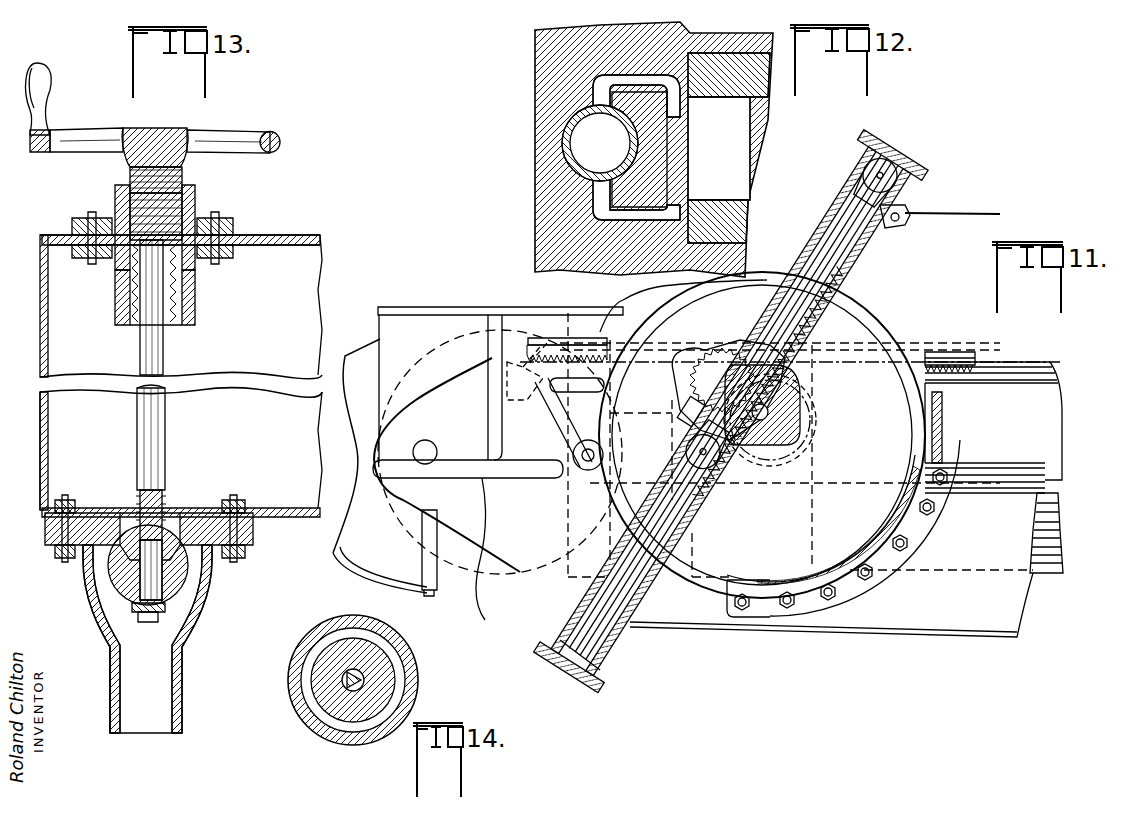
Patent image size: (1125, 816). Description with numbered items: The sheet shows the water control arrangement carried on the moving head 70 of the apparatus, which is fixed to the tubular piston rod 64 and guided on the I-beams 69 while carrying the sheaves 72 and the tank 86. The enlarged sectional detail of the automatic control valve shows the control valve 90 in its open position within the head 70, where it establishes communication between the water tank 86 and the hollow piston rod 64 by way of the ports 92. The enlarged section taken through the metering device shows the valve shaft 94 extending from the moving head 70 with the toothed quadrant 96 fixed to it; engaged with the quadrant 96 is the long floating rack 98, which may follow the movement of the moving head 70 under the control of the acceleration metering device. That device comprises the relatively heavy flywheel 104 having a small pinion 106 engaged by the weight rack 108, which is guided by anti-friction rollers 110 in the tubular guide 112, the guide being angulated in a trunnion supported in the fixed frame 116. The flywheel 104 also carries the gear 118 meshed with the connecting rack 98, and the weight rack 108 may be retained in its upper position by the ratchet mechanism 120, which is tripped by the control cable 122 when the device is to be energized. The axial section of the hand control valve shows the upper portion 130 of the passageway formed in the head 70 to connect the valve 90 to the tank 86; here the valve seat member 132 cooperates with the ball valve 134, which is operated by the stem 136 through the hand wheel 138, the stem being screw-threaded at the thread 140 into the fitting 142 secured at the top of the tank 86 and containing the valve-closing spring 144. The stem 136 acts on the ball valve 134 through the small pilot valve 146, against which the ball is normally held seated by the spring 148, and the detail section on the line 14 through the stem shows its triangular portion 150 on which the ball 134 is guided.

In FIG. 13, the section line 14— 14 is at (283, 570).
In FIG. 12, the tubular piston rod 64 is at (735, 205).
In FIG. 11, the I-beams 69 is at (945, 622).
In FIG. 13, the moving head 70 is at (112, 688).
In FIG. 14, the moving head 70 is at (305, 712).
In FIG. 12, the moving head 70 is at (540, 48).
In FIG. 11, the moving head 70 is at (415, 310).
In FIG. 11, the sheaves 72 is at (445, 572).
In FIG. 13, the tank 86 is at (40, 432).
In FIG. 12, the control valve 90 is at (562, 136).
In FIG. 12, the ports 92 is at (595, 195).
In FIG. 11, the valve shaft 94 is at (585, 470).
In FIG. 11, the toothed quadrant 96 is at (540, 380).
In FIG. 11, the floating rack 98 is at (537, 347).
In FIG. 11, the flywheel 104 is at (905, 337).
In FIG. 11, the pinion 106 is at (775, 418).
In FIG. 11, the weight rack 108 is at (855, 278).
In FIG. 11, the anti-friction rollers 110 is at (897, 172).
In FIG. 11, the tubular guide 112 is at (640, 605).
In FIG. 11, the fixed frame 116 is at (903, 518).
In FIG. 11, the gear 118 is at (728, 390).
In FIG. 11, the ratchet mechanism 120 is at (905, 212).
In FIG. 11, the control cable 122 is at (967, 203).
In FIG. 13, the passageway upper portion 130 is at (186, 663).
In FIG. 13, the valve seat member 132 is at (200, 513).
In FIG. 13, the ball valve 134 is at (186, 600).
In FIG. 14, the ball valve 134 is at (388, 690).
In FIG. 13, the stem 136 is at (165, 440).
In FIG. 13, the hand wheel 138 is at (187, 136).
In FIG. 13, the screw thread 140 is at (195, 200).
In FIG. 13, the fitting 142 is at (235, 228).
In FIG. 13, the valve-closing spring 144 is at (195, 285).
In FIG. 13, the pilot valve 146 is at (132, 608).
In FIG. 13, the spring 148 is at (163, 498).
In FIG. 14, the triangular portion 150 is at (362, 676).